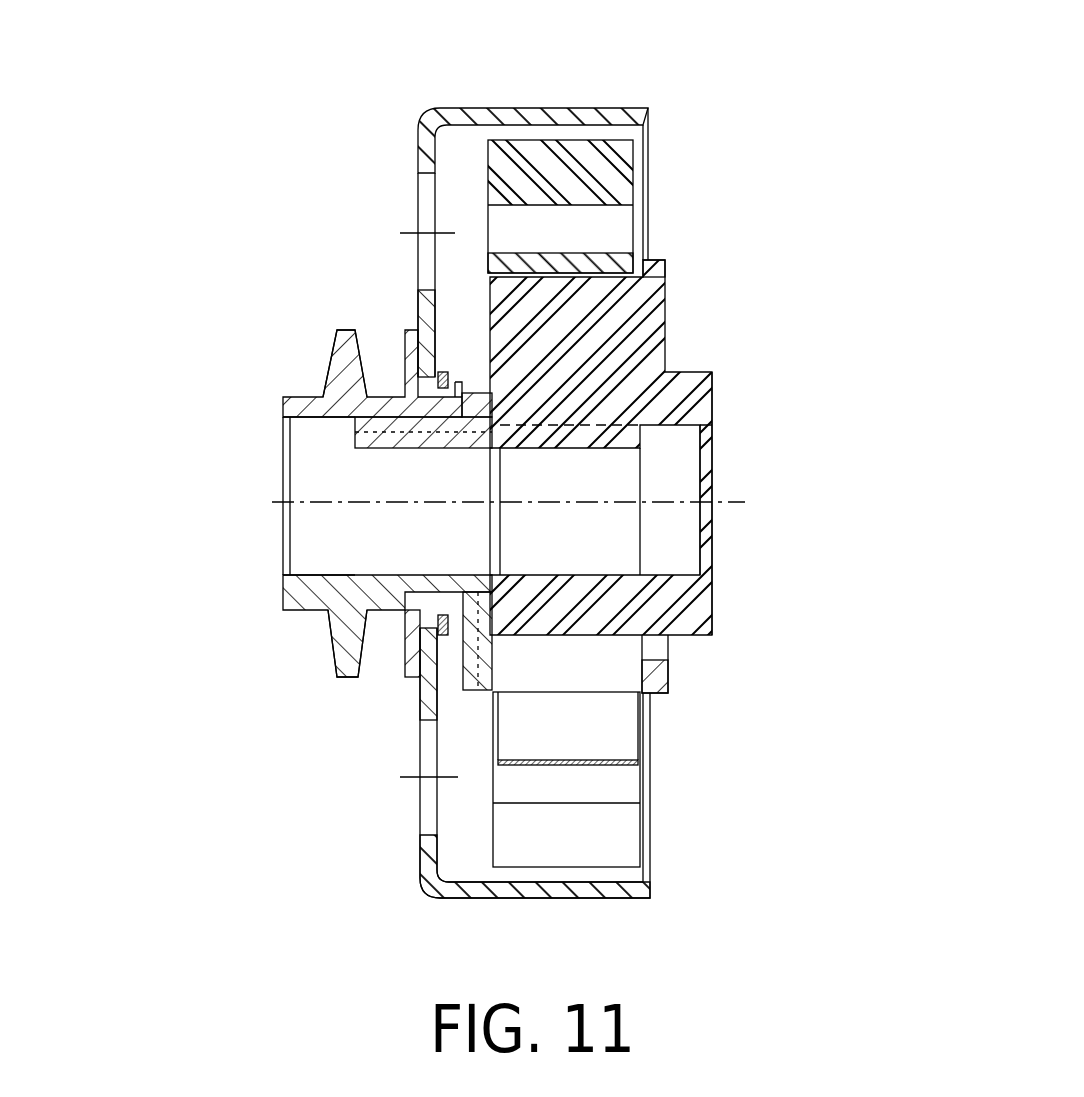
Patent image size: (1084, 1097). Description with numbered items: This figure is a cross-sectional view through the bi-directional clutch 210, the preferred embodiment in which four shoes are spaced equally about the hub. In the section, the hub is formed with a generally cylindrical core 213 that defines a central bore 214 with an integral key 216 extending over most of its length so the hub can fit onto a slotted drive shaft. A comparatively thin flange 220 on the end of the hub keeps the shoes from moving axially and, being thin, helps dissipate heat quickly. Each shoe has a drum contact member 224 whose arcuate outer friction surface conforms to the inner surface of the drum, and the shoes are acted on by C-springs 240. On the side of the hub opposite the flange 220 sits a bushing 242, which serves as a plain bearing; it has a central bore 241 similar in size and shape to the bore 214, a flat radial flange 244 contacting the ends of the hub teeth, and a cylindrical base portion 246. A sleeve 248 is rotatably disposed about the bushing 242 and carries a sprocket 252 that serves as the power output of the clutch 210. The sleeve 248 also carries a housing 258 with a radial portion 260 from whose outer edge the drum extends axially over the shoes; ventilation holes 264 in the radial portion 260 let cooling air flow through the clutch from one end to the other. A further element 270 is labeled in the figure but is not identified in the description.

The clutch 210 is at (680, 65).
The cylindrical core 213 is at (600, 612).
The central bore 214 is at (585, 575).
The integral key 216 is at (283, 457).
The flange 220 is at (655, 330).
The drum contact member 224 is at (600, 175).
The C-springs 240 is at (590, 765).
The central bore 241 is at (358, 575).
The bushing 242 is at (300, 395).
The flat radial flange 244 is at (462, 658).
The cylindrical base portion 246 is at (288, 592).
The sleeve 248 is at (307, 612).
The sprocket 252 is at (340, 352).
The housing 258 is at (510, 108).
The radial portion 260 is at (418, 148).
The ventilation holes 264 is at (428, 808).
The step 270 is at (650, 257).